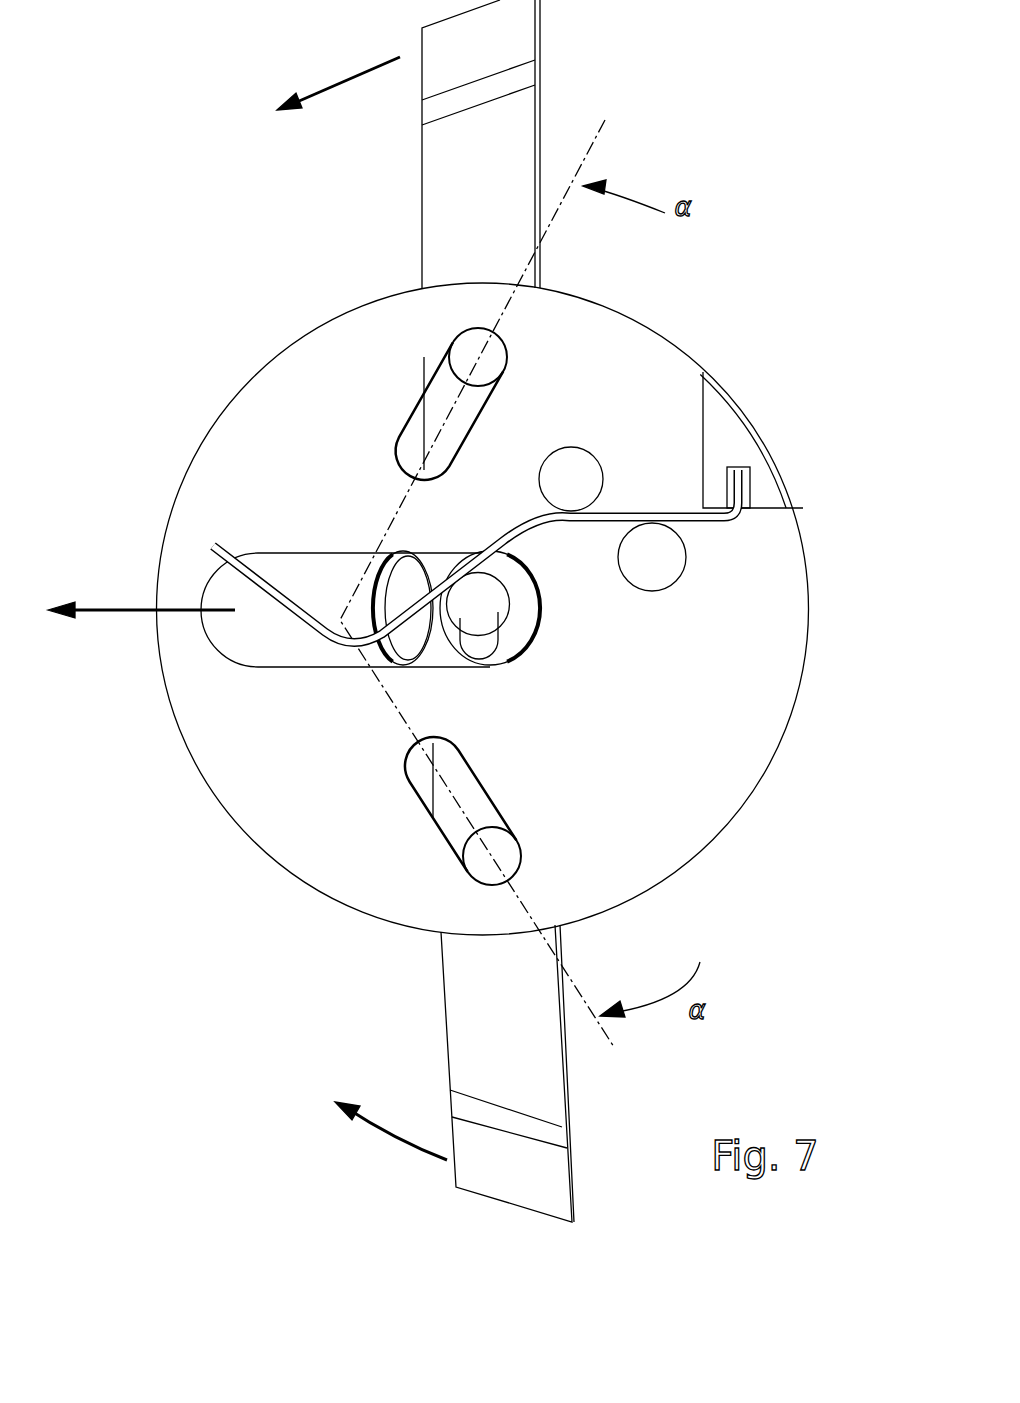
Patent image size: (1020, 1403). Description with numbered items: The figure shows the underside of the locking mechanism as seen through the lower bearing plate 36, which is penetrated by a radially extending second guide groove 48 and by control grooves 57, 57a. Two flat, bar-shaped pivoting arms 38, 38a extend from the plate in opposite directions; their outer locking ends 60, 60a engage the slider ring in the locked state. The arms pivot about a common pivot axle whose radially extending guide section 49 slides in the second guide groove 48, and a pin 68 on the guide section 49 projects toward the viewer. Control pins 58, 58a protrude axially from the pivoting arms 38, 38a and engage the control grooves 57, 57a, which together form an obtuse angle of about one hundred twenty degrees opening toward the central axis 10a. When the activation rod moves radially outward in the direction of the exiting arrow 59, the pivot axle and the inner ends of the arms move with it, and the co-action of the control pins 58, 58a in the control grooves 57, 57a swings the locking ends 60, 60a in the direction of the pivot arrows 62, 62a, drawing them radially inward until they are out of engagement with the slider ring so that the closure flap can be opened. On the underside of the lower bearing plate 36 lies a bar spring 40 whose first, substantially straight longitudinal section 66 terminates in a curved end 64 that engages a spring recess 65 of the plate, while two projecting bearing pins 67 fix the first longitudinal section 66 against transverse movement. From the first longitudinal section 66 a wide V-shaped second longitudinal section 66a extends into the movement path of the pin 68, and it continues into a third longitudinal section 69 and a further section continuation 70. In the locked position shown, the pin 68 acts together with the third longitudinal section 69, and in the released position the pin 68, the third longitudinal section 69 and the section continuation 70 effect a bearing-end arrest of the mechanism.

The central axis 10a is at (500, 648).
The lower bearing plate 36 is at (288, 822).
The pivoting arm 38 is at (472, 1000).
The pivoting arm 38a is at (440, 176).
The bar spring 40 is at (566, 538).
The second guide groove 48 is at (281, 668).
The guide section 49 is at (483, 650).
The control groove 57 is at (420, 790).
The control groove 57a is at (443, 388).
The control pin 58 is at (505, 853).
The control pin 58a is at (465, 355).
The exiting arrow 59 is at (141, 582).
The locking end 60 is at (520, 1125).
The locking end 60a is at (485, 90).
The pivot arrow 62 is at (400, 1145).
The pivot arrow 62a is at (350, 70).
The curved end 64 is at (760, 483).
The spring recess 65 is at (728, 485).
The first longitudinal section 66 is at (653, 513).
The second longitudinal section 66a is at (467, 560).
The bearing pin 67 is at (573, 480).
The pin 68 is at (470, 655).
The third longitudinal section 69 is at (362, 660).
The section continuation 70 is at (276, 592).